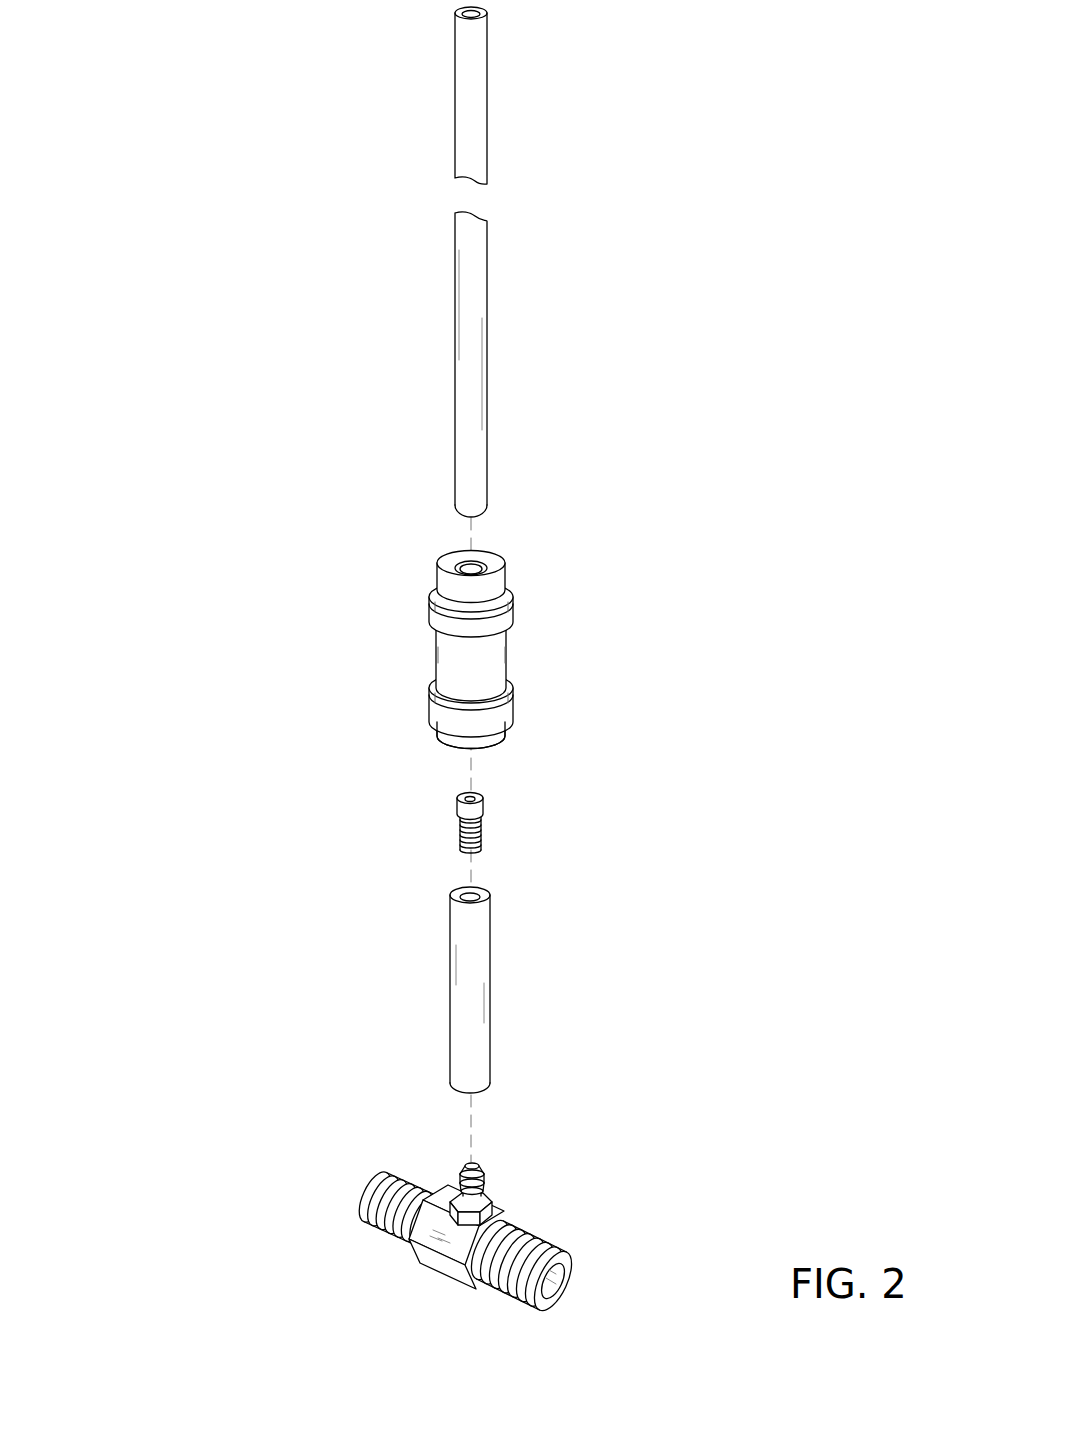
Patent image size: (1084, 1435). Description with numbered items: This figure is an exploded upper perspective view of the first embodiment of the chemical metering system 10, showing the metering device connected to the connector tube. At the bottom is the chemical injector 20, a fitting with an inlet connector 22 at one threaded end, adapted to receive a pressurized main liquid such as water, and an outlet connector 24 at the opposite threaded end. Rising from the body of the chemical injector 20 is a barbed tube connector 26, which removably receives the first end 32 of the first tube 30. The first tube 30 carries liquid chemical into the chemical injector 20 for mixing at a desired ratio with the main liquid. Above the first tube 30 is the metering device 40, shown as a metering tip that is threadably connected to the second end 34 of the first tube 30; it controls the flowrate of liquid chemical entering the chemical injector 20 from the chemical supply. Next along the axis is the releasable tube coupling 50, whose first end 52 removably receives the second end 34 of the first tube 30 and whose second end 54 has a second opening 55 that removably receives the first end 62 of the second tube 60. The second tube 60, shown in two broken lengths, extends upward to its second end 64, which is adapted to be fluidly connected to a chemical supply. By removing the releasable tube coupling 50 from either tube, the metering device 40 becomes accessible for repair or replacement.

The chemical metering system 10 is at (165, 177).
The chemical injector 20 is at (530, 1209).
The inlet connector 22 is at (375, 1185).
The outlet connector 24 is at (568, 1285).
The barbed tube connector 26 is at (482, 1164).
The first tube 30 is at (490, 953).
The first end of first tube 32 is at (485, 1092).
The second end of first tube 34 is at (458, 887).
The metering device 40 is at (485, 803).
The releasable tube coupling 50 is at (512, 636).
The first end of releasable tube coupling 52 is at (497, 748).
The second end of releasable tube coupling 54 is at (497, 563).
The second opening 55 is at (456, 567).
The second tube 60 is at (487, 272).
The first end of second tube 62 is at (485, 502).
The second end of second tube 64 is at (487, 10).